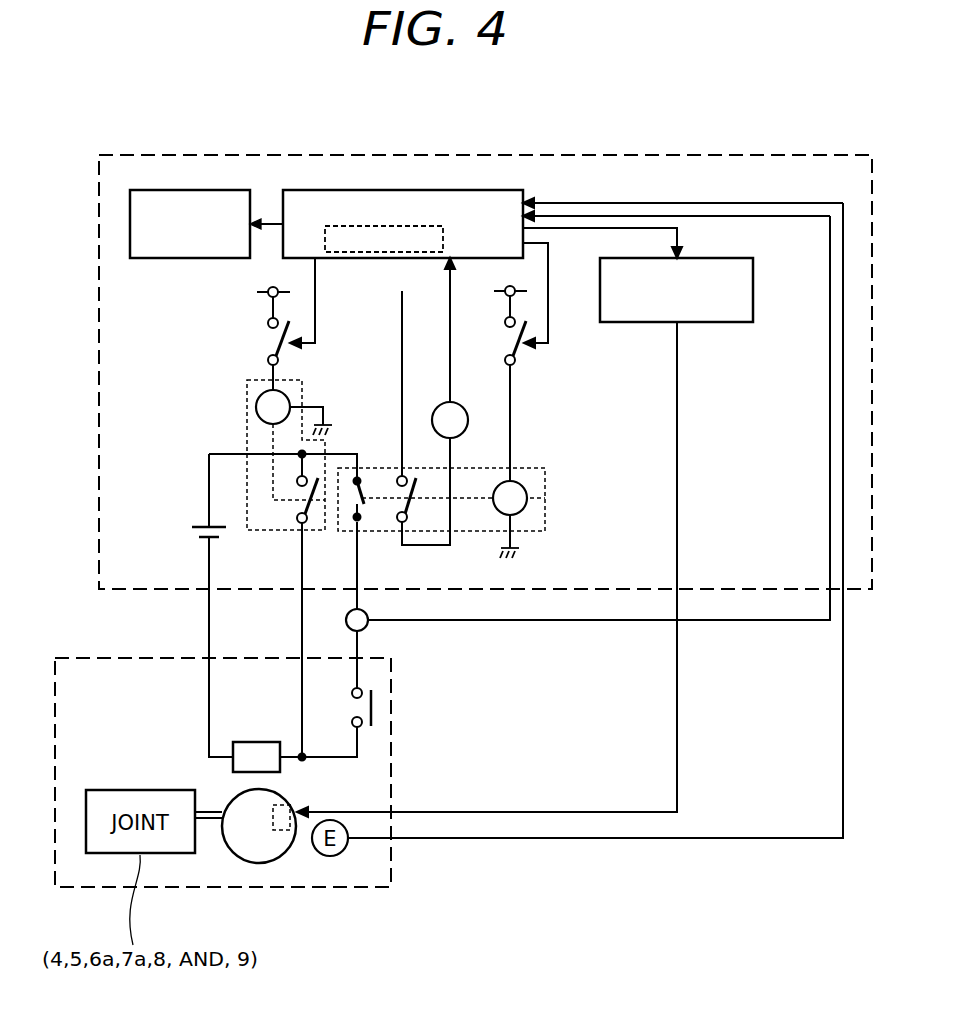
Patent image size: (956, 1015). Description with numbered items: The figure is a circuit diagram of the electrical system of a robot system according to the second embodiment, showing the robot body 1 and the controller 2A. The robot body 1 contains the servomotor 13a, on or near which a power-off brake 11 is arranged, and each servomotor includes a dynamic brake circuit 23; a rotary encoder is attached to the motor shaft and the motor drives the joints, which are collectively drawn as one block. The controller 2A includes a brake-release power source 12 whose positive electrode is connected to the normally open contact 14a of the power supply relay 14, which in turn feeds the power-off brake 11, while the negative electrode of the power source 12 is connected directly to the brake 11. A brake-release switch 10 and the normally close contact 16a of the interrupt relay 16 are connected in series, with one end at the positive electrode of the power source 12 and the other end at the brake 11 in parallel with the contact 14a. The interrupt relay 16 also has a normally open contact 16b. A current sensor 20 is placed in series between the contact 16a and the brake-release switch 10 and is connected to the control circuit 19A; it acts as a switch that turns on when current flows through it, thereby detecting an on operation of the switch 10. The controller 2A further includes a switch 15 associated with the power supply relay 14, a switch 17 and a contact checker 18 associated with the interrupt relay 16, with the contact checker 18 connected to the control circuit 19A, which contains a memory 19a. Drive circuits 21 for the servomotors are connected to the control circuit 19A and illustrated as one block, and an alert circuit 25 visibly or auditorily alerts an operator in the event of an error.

The robot body 1 is at (355, 888).
The controller 2A is at (408, 155).
The brake-release switch 10 is at (374, 706).
The power-off brake 11 is at (255, 740).
The brake-release power source 12 is at (190, 534).
The servomotor 13a is at (275, 863).
The power supply relay 14 is at (256, 407).
The normally open contact 14a is at (299, 507).
The switch 15 is at (270, 342).
The interrupt relay 16 is at (527, 512).
The normally close contact 16a is at (365, 505).
The normally open contact 16b is at (400, 495).
The switch 17 is at (520, 350).
The contact checker 18 is at (466, 403).
The control circuit 19A is at (350, 190).
The memory 19a is at (445, 238).
The current sensor 20 is at (368, 628).
The drive circuit 21 is at (755, 284).
The dynamic brake circuit 23 is at (293, 800).
The alert circuit 25 is at (188, 190).